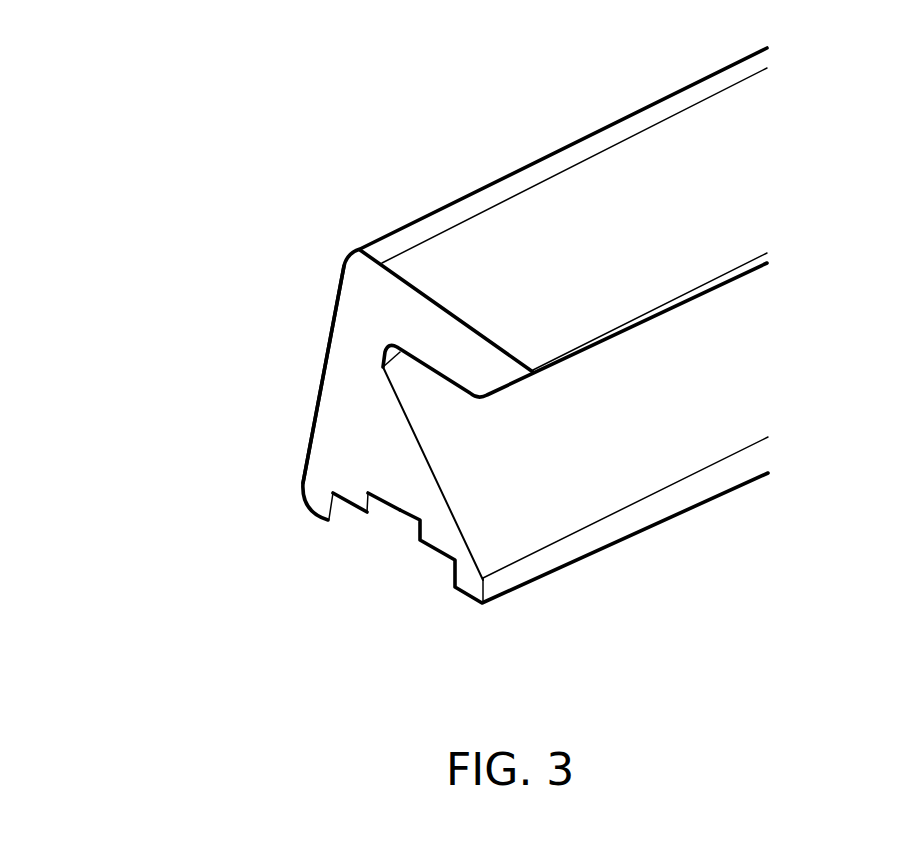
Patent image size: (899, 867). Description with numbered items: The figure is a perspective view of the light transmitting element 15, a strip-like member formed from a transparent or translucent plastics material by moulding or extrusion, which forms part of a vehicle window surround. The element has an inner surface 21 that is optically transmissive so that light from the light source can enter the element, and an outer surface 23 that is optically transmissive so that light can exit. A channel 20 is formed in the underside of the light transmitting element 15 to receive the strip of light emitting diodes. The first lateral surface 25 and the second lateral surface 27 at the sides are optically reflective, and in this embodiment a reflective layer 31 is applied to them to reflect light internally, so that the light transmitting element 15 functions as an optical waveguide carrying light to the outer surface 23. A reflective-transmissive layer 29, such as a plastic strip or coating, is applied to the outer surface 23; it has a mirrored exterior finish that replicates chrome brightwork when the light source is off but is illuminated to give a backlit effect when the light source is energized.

The light transmitting element 15 is at (248, 498).
The channel 20 is at (402, 512).
The inner surface 21 is at (425, 596).
The outer surface 23 is at (732, 164).
The first lateral surface 25 is at (284, 395).
The second lateral surface 27 is at (753, 369).
The reflective-transmissive layer 29 is at (603, 241).
The reflective layer 31 is at (610, 426).